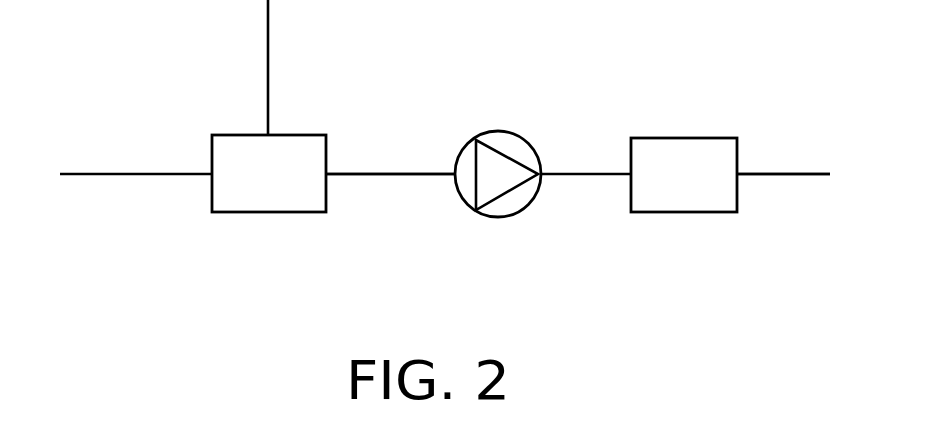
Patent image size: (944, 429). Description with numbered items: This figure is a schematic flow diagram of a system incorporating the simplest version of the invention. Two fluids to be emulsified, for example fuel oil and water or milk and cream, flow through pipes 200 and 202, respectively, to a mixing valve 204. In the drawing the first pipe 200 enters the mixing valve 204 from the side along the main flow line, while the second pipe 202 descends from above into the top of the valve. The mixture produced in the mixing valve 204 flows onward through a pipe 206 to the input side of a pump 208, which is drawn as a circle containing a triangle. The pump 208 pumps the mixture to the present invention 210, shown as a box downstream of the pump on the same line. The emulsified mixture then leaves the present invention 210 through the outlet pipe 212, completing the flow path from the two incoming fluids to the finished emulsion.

The pipe 200 is at (129, 174).
The pipe 202 is at (268, 48).
The mixing valve 204 is at (281, 175).
The pipe 206 is at (375, 174).
The pump 208 is at (489, 180).
The present invention 210 is at (693, 160).
The pipe 212 is at (780, 175).